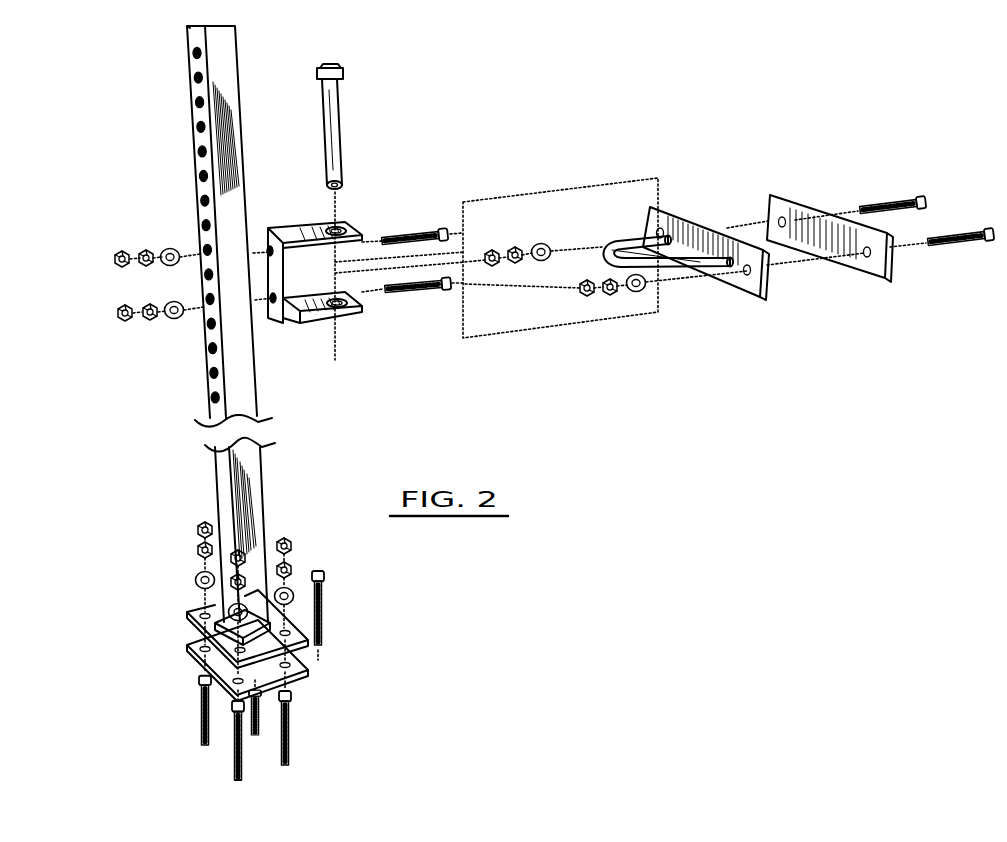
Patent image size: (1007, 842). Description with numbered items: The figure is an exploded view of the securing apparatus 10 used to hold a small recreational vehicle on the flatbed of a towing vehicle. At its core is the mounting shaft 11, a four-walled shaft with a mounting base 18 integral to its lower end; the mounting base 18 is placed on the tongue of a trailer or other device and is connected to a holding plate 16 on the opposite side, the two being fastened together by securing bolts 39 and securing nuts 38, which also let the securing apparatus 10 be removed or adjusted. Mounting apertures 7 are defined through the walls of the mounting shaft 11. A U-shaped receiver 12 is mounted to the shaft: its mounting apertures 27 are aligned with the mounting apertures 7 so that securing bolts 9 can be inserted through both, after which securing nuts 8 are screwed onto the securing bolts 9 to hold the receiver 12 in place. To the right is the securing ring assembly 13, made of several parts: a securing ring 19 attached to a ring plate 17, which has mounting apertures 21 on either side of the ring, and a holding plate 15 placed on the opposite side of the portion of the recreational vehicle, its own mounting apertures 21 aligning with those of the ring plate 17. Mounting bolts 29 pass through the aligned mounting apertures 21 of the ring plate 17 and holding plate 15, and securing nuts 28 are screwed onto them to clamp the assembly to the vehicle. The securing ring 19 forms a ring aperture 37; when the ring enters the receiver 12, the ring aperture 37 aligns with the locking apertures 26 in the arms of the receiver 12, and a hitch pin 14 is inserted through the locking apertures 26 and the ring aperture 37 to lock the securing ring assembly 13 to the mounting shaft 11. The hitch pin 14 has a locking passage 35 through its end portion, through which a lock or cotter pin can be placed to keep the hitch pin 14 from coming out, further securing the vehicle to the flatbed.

The mounting apertures 7 is at (195, 53).
The securing nuts 8 is at (147, 258).
The securing bolts 9 is at (442, 228).
The securing apparatus 10 is at (176, 362).
The mounting shaft 11 is at (240, 60).
The receiver 12 is at (357, 226).
The securing ring assembly 13 is at (916, 168).
The hitch pin 14 is at (341, 122).
The holding plate 15 is at (857, 283).
The holding plate 16 is at (303, 675).
The ring plate 17 is at (735, 290).
The mounting base 18 is at (188, 612).
The securing ring 19 is at (672, 268).
The mounting apertures 21 is at (781, 220).
The locking apertures 26 is at (337, 225).
The mounting apertures 27 is at (268, 248).
The securing nuts 28 is at (515, 249).
The mounting bolts 29 is at (917, 198).
The locking passage 35 is at (326, 183).
The ring aperture 37 is at (653, 243).
The securing nuts 38 is at (291, 547).
The securing bolts 39 is at (288, 725).